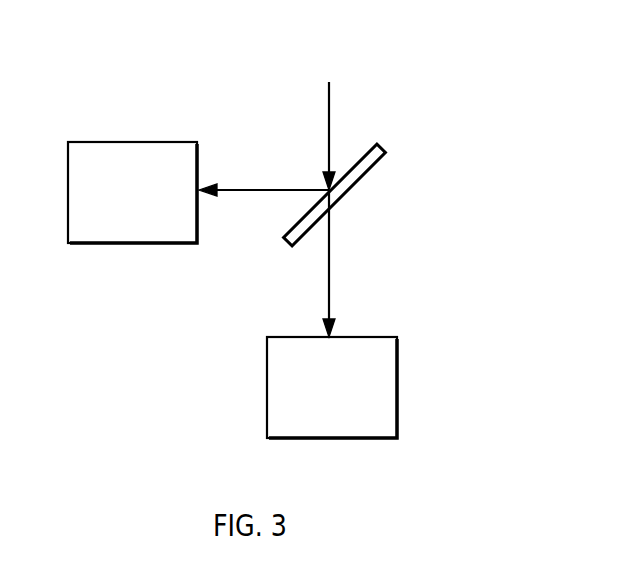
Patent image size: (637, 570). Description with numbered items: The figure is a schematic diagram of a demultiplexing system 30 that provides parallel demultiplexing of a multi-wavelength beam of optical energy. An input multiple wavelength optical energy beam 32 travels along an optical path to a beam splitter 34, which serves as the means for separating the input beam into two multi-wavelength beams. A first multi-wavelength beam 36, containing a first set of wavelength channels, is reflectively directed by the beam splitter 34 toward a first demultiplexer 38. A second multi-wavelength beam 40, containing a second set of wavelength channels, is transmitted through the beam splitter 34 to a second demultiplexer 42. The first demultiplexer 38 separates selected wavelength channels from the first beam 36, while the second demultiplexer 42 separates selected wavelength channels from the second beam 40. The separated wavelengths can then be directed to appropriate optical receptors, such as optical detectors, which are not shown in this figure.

The demultiplexing system 30 is at (423, 100).
The input multiple wavelength optical energy beam 32 is at (329, 92).
The beam splitter 34 is at (358, 182).
The first multi-wavelength beam 36 is at (260, 190).
The first demultiplexer 38 is at (117, 145).
The second multi-wavelength beam 40 is at (329, 261).
The second demultiplexer 42 is at (388, 385).